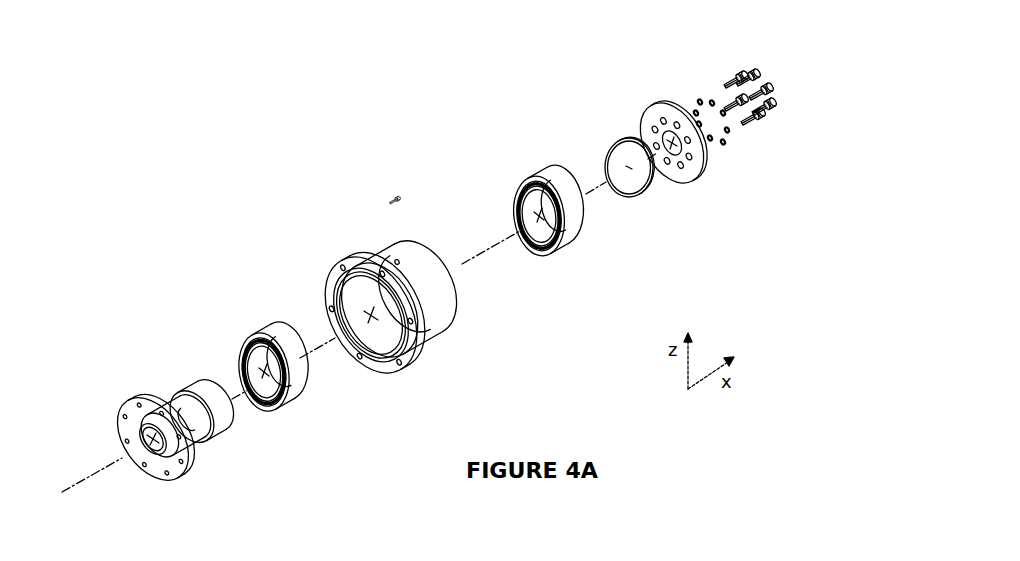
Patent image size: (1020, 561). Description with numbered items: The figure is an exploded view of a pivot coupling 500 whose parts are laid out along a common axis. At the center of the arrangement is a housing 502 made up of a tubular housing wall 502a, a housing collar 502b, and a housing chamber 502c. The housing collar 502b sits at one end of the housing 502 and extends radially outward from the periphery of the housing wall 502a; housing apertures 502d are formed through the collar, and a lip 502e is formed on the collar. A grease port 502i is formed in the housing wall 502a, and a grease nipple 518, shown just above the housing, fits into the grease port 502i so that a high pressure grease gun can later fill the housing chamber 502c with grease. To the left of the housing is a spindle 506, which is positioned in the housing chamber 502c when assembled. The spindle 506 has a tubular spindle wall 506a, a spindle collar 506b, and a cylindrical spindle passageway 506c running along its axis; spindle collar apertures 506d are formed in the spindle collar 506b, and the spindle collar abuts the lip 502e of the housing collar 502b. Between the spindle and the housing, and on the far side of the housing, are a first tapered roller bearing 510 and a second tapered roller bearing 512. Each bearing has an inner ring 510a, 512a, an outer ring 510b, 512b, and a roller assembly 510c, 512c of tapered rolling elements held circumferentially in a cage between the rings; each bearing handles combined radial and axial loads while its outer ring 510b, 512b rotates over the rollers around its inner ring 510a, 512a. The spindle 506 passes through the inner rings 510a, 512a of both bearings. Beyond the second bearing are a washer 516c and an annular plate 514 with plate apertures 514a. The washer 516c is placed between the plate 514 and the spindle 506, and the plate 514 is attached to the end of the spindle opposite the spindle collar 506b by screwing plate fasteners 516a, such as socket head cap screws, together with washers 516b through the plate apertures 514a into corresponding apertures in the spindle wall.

The pivot coupling 500 is at (196, 243).
The housing 502 is at (349, 322).
The tubular housing wall 502a is at (437, 325).
The housing collar 502b is at (398, 366).
The housing chamber 502c is at (330, 309).
The housing apertures 502d is at (362, 372).
The lip 502e is at (338, 286).
The grease port 502i is at (390, 252).
The spindle 506 is at (159, 438).
The tubular spindle wall 506a is at (208, 431).
The spindle collar 506b is at (158, 477).
The cylindrical spindle passageway 506c is at (142, 442).
The spindle collar apertures 506d is at (144, 445).
The first tapered roller bearing 510 is at (250, 378).
The inner ring 510a is at (262, 410).
The outer ring 510b is at (293, 410).
The roller assembly 510c is at (242, 347).
The second tapered roller bearing 512 is at (524, 219).
The inner ring 512a is at (531, 235).
The outer ring 512b is at (574, 247).
The roller assembly 512c is at (522, 190).
The annular plate 514 is at (659, 159).
The plate apertures 514a is at (683, 178).
The plate fasteners 516a is at (736, 80).
The washers 516b is at (697, 99).
The washer 516c is at (612, 139).
The grease nipple 518 is at (391, 197).